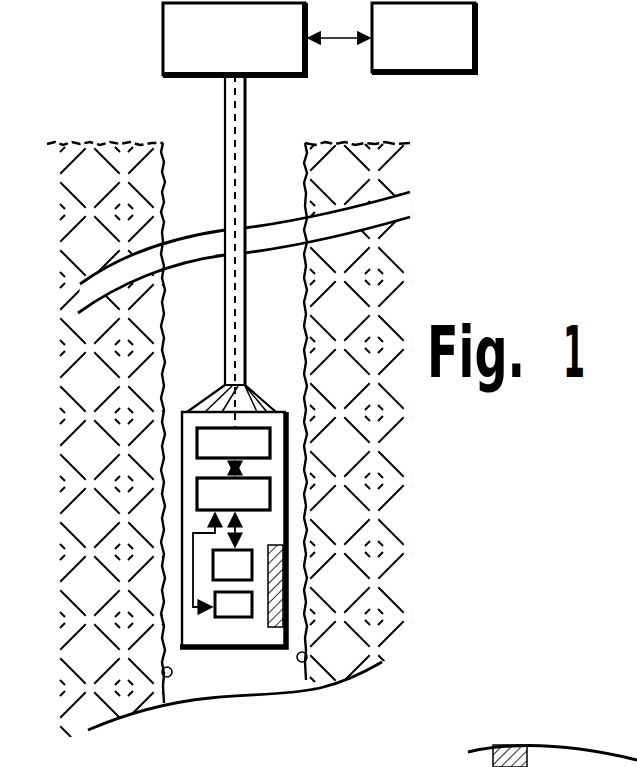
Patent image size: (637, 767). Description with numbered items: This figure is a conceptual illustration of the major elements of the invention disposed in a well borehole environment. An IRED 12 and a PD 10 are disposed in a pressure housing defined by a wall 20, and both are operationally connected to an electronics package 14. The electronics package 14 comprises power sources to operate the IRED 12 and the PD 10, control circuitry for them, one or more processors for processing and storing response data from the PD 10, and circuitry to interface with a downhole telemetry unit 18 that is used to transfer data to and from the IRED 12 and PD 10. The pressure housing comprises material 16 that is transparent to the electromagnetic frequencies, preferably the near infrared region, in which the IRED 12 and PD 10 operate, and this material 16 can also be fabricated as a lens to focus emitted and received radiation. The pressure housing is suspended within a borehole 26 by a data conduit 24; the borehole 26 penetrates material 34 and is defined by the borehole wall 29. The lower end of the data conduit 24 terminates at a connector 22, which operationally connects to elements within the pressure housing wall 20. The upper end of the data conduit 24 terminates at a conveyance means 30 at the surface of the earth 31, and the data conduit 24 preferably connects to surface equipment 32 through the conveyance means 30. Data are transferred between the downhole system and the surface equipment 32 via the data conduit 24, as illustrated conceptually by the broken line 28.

The PD 10 is at (243, 549).
The IRED 12 is at (233, 617).
The electronics package 14 is at (197, 493).
The material 16 is at (287, 568).
The downhole telemetry unit 18 is at (197, 441).
The wall 20 is at (286, 412).
The connector 22 is at (251, 397).
The data conduit 24 is at (225, 323).
The borehole 26 is at (195, 299).
The broken line 28 is at (237, 200).
The borehole wall 29 is at (162, 675).
The conveyance means 30 is at (275, 75).
The surface of the earth 31 is at (347, 131).
The surface equipment 32 is at (400, 72).
The material 34 is at (388, 308).